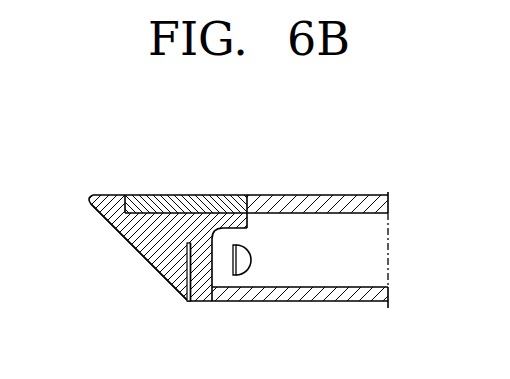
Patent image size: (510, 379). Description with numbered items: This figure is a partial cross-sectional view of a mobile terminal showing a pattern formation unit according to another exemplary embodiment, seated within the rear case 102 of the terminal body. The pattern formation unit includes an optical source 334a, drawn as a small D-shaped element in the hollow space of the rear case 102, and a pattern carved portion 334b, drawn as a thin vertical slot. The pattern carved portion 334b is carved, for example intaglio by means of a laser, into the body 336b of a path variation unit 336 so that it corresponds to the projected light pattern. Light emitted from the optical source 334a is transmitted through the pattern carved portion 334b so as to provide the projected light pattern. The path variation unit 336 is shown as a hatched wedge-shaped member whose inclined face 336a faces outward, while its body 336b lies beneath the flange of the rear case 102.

The rear case 102 is at (343, 292).
The path variation unit 336 is at (154, 238).
The inclined surface of seal member 336a is at (162, 278).
The body 336b is at (178, 223).
The optical source 334a is at (243, 262).
The pattern carved portion 334b is at (188, 302).